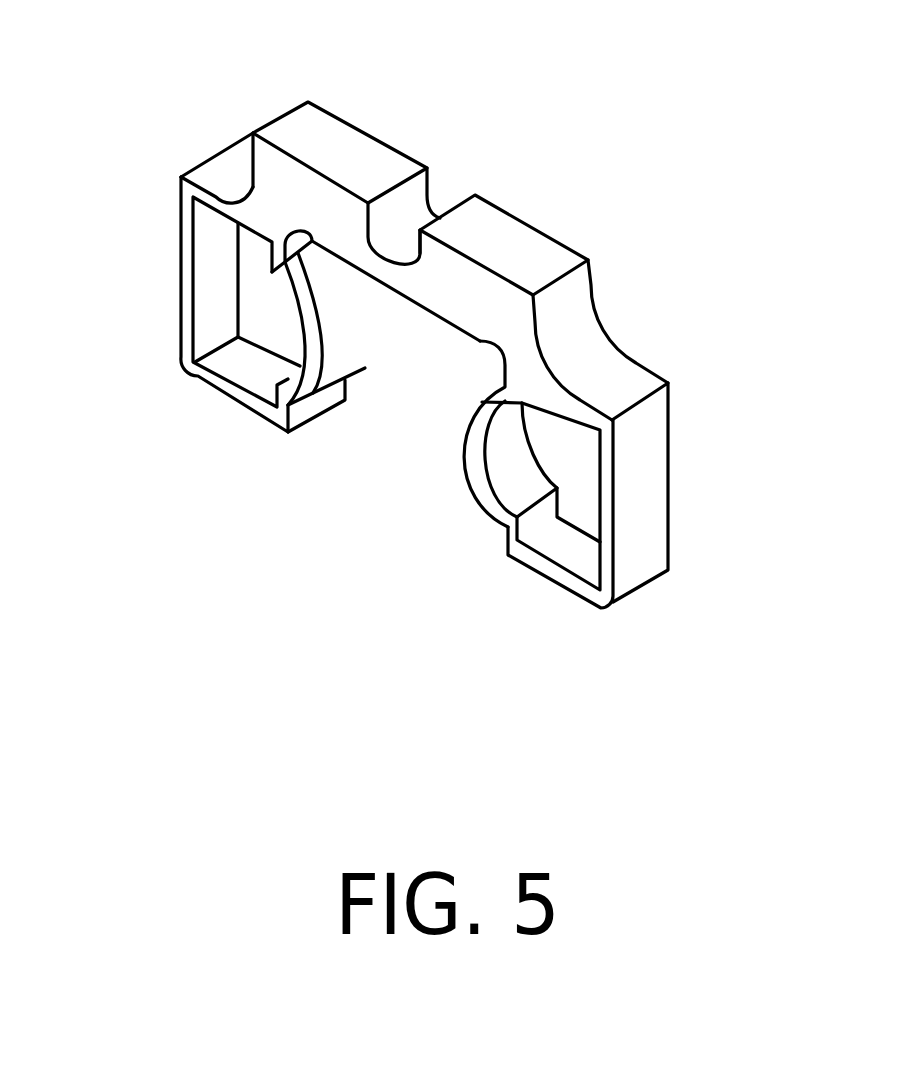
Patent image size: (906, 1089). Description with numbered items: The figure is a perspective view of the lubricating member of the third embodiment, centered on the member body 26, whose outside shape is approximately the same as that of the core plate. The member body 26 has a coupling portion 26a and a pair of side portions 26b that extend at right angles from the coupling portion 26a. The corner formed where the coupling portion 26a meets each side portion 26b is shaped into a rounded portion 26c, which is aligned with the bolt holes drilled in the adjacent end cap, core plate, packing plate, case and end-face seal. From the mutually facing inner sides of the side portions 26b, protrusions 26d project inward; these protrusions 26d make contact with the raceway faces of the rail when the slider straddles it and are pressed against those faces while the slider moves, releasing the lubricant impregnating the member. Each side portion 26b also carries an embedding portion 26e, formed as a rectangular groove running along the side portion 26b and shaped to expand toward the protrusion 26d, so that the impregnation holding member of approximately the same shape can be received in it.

The member body 26 is at (338, 157).
The coupling portion 26a is at (512, 250).
The side portions 26b is at (180, 228).
The rounded portion 26c is at (230, 170).
The protrusions 26d is at (498, 386).
The embedding portion 26e is at (228, 357).